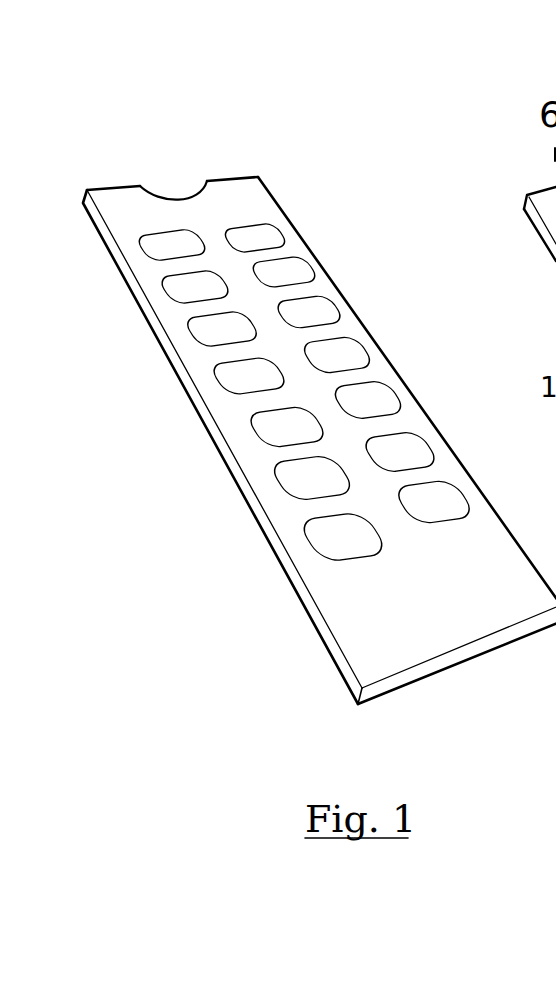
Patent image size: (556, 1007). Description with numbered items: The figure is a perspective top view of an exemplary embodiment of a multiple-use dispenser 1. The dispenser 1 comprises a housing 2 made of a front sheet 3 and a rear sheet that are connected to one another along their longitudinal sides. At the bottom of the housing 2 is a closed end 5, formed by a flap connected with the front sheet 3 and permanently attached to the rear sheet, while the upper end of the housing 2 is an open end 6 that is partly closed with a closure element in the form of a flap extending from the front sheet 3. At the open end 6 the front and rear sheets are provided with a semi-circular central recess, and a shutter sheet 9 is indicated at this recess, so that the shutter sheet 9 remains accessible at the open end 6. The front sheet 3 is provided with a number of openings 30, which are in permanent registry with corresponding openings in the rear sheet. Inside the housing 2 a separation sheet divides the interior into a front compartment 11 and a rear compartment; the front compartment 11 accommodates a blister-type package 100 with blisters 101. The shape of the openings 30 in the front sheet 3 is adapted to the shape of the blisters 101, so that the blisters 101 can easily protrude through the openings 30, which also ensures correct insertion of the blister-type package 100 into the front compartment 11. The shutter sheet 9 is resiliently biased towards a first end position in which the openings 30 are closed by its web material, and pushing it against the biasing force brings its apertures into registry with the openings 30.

The multiple-use dispenser 1 is at (190, 592).
The housing 2 is at (178, 388).
The front sheet 3 is at (355, 618).
The closed end 5 is at (463, 665).
The open end 6 is at (124, 158).
The shutter sheet 9 is at (183, 190).
The front compartment 11 is at (243, 184).
The openings 30 is at (310, 334).
The blister-type package 100 is at (272, 228).
The blisters 101 is at (394, 450).